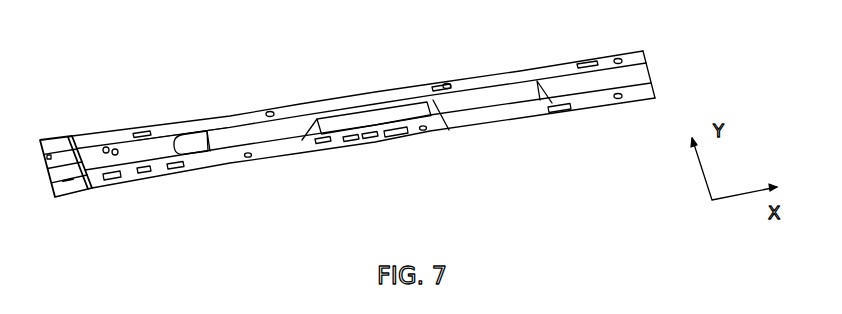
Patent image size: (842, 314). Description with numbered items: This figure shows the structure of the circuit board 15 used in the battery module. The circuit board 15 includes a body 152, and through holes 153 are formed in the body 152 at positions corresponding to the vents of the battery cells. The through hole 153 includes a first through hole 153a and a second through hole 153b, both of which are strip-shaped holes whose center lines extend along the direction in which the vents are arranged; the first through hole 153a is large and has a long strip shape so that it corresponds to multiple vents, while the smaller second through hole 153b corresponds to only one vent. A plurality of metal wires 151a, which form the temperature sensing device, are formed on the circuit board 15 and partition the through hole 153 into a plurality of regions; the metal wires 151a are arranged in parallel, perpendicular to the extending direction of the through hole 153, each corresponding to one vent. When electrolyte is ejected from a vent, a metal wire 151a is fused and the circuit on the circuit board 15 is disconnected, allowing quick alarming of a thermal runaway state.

The circuit board 15 is at (347, 116).
The metal wire 151a is at (100, 143).
The body 152 is at (340, 100).
The through hole 153 is at (192, 77).
The first through hole 153a is at (128, 57).
The second through hole 153b is at (115, 148).